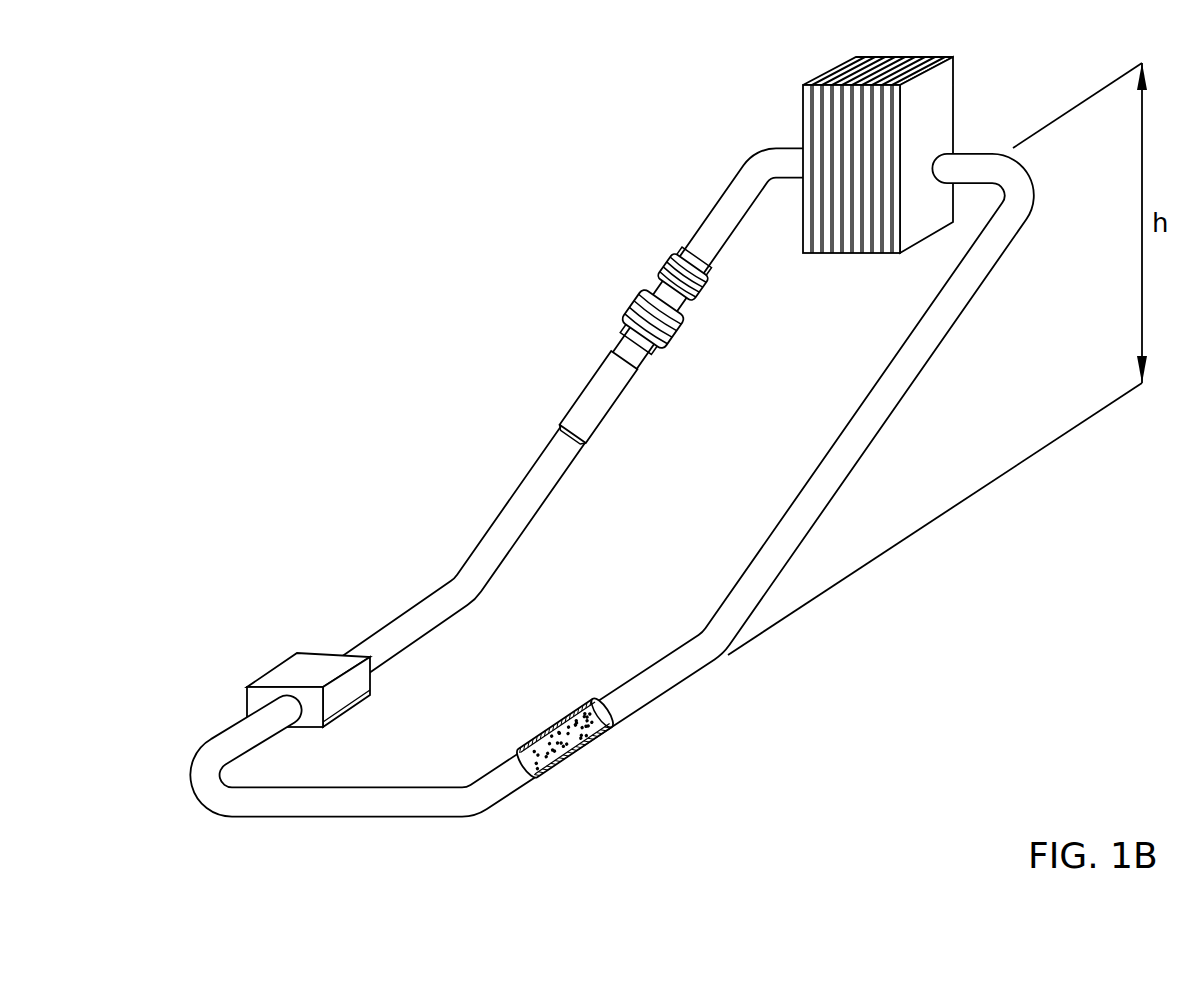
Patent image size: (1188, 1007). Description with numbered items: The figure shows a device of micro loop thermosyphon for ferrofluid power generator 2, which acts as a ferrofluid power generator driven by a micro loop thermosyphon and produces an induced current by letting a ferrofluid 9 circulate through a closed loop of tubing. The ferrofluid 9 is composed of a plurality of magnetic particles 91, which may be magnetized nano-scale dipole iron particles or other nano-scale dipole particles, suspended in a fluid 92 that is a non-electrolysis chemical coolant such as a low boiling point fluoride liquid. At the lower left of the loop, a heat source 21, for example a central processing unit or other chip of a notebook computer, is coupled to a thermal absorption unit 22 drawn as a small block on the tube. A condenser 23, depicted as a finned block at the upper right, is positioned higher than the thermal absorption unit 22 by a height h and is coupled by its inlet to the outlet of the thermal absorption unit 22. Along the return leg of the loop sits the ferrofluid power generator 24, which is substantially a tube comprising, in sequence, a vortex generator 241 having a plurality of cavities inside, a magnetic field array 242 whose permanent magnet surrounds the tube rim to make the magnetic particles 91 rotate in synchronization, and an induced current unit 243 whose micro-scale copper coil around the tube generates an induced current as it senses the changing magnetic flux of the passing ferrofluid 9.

The device of micro loop thermosyphon for ferrofluid power generator 2 is at (332, 335).
The heat source 21 is at (302, 724).
The thermal absorption unit 22 is at (297, 693).
The condenser 23 is at (818, 117).
The ferrofluid power generator 24 is at (489, 245).
The vortex generator 241 is at (600, 383).
The magnetic field array 242 is at (633, 303).
The induced current unit 243 is at (668, 260).
The ferrofluid 9 is at (697, 733).
The magnetic particles 91 is at (603, 725).
The fluid 92 is at (548, 765).